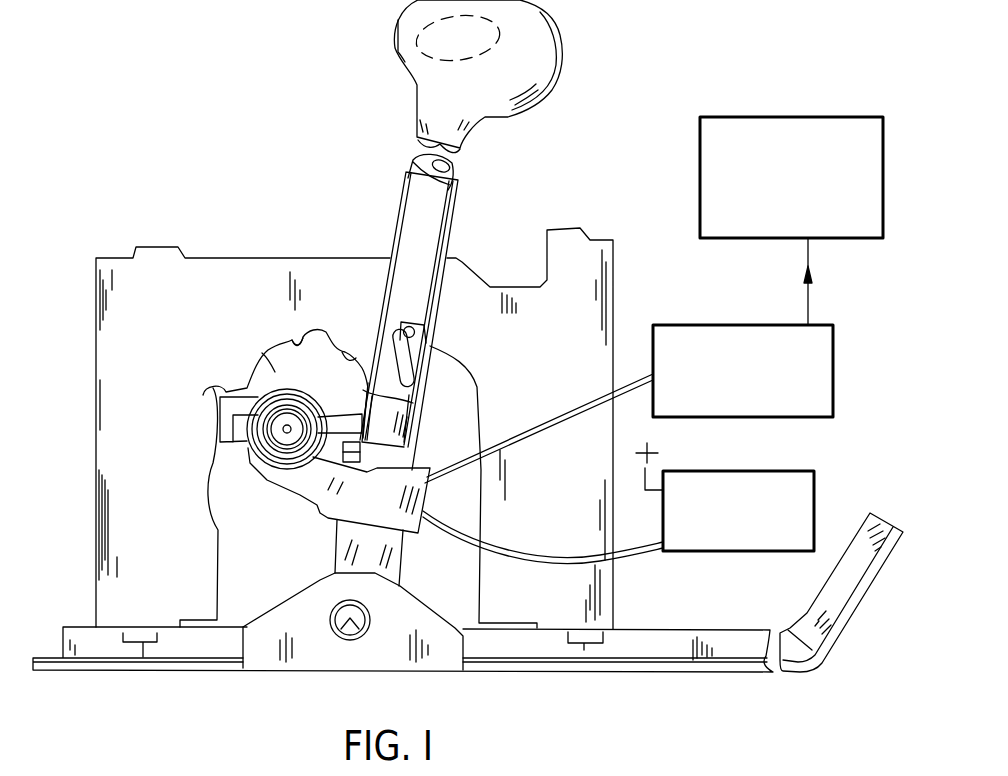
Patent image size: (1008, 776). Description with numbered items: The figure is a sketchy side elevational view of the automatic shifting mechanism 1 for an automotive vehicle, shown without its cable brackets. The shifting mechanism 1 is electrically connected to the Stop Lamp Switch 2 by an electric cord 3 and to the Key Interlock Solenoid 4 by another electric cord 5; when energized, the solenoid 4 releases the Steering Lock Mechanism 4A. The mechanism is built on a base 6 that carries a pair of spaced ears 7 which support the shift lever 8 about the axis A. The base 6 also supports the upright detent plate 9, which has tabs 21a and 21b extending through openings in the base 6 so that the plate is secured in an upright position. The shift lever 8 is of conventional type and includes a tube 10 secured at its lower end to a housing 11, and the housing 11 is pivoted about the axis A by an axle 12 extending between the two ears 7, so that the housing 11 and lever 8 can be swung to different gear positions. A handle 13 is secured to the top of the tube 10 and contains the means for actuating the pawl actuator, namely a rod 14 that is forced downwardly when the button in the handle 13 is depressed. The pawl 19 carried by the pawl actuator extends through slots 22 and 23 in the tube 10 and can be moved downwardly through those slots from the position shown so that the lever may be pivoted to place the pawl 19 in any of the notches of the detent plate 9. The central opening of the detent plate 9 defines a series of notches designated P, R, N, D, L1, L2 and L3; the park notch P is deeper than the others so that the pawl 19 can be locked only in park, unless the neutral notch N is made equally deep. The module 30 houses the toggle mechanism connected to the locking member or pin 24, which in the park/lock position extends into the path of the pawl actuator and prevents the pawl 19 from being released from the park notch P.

The automatic shifting mechanism 1 is at (605, 175).
The stop lamp switch 2 is at (772, 472).
The electric cord 3 is at (650, 557).
The key interlock solenoid 4 is at (696, 332).
The steering lock mechanism 4A is at (700, 182).
The electric cord 5 is at (573, 420).
The base 6 is at (513, 653).
The spaced ears 7 is at (283, 642).
The shift lever 8 is at (385, 203).
The detent plate 9 is at (600, 270).
The tube 10 is at (437, 220).
The housing 11 is at (327, 543).
The axle 12 is at (345, 628).
The handle 13 is at (542, 42).
The rod 14 is at (445, 173).
The pawl 19 is at (397, 328).
The tab 21a is at (143, 658).
The tab 21b is at (585, 650).
The slot 22 is at (432, 356).
The slot 23 is at (423, 383).
The locking member or pin 24 is at (410, 452).
The module 30 is at (231, 468).
The park notch P is at (433, 322).
The drive notch D is at (303, 335).
The reverse notch R is at (337, 375).
The neutral notch N is at (344, 383).
The low gear notch L1 is at (286, 374).
The low gear notch L2 is at (228, 387).
The low gear notch L3 is at (212, 390).
The axis A is at (352, 627).